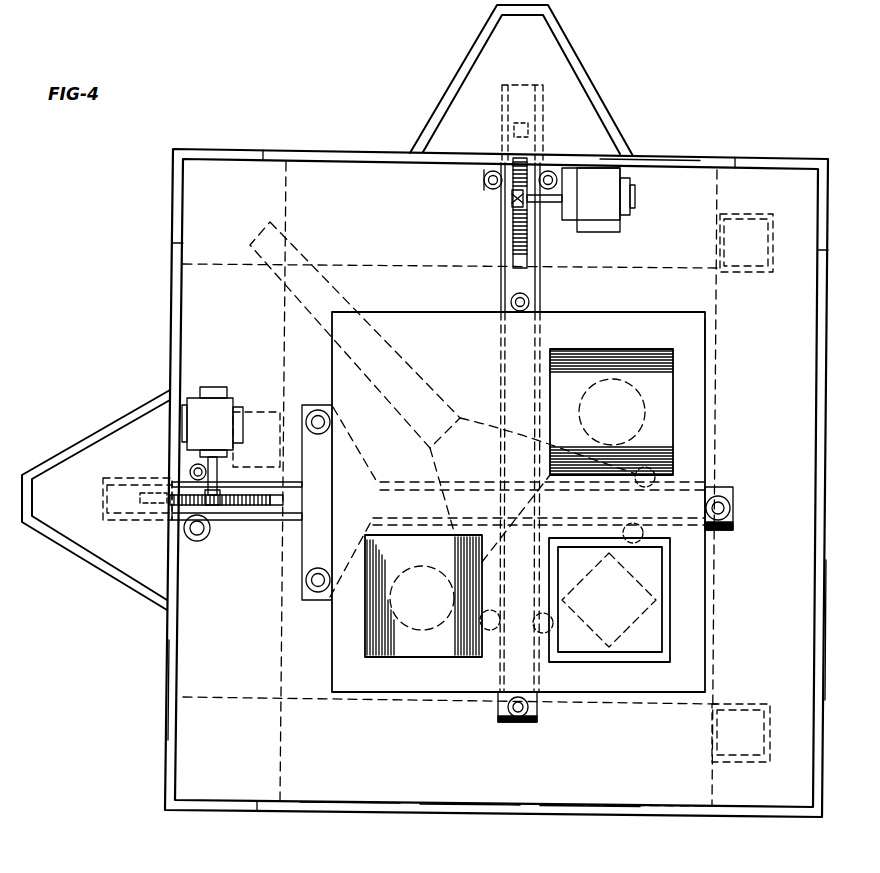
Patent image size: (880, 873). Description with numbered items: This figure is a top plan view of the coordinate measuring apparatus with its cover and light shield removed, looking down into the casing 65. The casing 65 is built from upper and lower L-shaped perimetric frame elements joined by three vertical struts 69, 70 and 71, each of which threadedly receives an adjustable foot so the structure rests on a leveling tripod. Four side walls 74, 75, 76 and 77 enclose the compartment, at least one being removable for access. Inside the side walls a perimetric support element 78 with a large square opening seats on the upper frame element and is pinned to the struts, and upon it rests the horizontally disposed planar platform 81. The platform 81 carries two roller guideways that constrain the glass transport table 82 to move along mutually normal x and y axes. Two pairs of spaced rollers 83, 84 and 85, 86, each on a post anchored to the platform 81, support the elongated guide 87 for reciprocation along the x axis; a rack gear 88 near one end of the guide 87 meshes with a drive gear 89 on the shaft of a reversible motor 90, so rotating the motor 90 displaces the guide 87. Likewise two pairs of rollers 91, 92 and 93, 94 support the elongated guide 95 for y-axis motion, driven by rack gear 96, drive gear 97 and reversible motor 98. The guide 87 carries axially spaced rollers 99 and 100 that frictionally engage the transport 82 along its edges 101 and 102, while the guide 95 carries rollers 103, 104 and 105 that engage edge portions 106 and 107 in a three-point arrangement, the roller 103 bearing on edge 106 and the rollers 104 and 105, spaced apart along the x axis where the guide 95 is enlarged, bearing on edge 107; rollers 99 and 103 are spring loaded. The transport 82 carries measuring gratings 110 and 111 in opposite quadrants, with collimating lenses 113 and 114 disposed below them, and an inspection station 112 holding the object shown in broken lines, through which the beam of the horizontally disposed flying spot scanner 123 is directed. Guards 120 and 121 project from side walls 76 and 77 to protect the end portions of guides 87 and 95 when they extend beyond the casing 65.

The casing 65 is at (172, 258).
The strut 69 is at (755, 762).
The strut 70 is at (748, 214).
The strut 71 is at (257, 420).
The side wall 74 is at (580, 805).
The side wall 75 is at (815, 630).
The side wall 76 is at (688, 159).
The side wall 77 is at (168, 705).
The support element 78 is at (345, 800).
The platform 81 is at (472, 790).
The transport table 82 is at (705, 340).
The roller 83 is at (543, 635).
The roller 84 is at (490, 632).
The roller 85 is at (550, 172).
The roller 86 is at (492, 170).
The elongated guide 87 is at (540, 290).
The rack gear 88 is at (513, 240).
The drive gear 89 is at (512, 198).
The reversible motor 90 is at (636, 205).
The roller 91 is at (643, 533).
The roller 92 is at (655, 477).
The roller 93 is at (185, 536).
The roller 94 is at (190, 470).
The elongated guide 95 is at (298, 505).
The rack gear 96 is at (258, 507).
The drive gear 97 is at (230, 520).
The reversible motor 98 is at (200, 392).
The roller 99 is at (508, 722).
The roller 100 is at (511, 302).
The edge 101 is at (645, 695).
The edge 102 is at (640, 312).
The roller 103 is at (733, 505).
The roller 104 is at (306, 590).
The roller 105 is at (318, 410).
The edge portion 106 is at (705, 405).
The edge portion 107 is at (345, 672).
The grating 110 is at (665, 452).
The grating 111 is at (395, 658).
The inspection station 112 is at (660, 647).
The collimating lens 113 is at (645, 410).
The collimating lens 114 is at (395, 606).
The guard 120 is at (572, 58).
The guard 121 is at (87, 557).
The flying spot scanner 123 is at (485, 385).